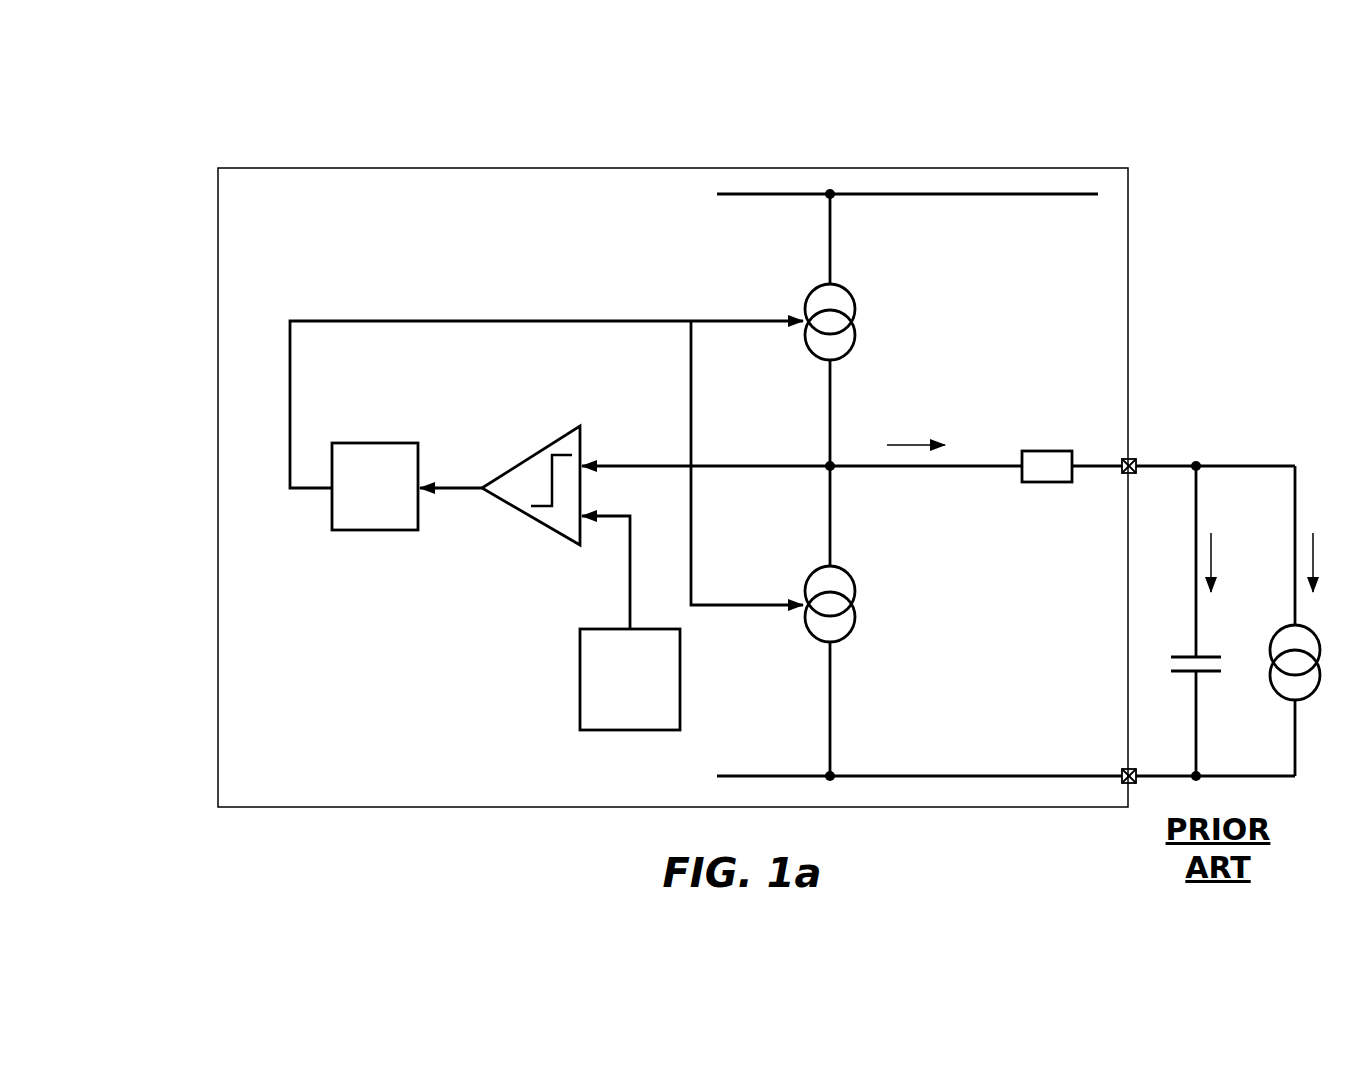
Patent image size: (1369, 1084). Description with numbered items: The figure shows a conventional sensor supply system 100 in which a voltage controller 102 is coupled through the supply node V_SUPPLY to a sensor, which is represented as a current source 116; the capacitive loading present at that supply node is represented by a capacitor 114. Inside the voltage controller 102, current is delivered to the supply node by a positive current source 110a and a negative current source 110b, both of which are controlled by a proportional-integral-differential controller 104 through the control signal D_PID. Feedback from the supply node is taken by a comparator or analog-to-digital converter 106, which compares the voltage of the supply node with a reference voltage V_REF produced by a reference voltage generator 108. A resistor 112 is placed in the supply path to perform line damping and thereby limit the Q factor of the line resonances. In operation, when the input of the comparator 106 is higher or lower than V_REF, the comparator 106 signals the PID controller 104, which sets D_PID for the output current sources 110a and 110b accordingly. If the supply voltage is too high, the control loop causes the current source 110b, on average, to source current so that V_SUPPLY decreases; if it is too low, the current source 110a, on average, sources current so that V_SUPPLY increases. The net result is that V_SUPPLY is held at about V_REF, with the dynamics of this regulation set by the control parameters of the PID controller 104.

The sensor supply system 100 is at (157, 150).
The voltage controller 102 is at (313, 168).
The proportional-integral-differential (PID) controller 104 is at (364, 443).
The comparator or analog-to-digital converter (ADC) 106 is at (542, 450).
The reference voltage generator 108 is at (598, 629).
The positive current source 110a is at (842, 291).
The negative current source 110b is at (842, 569).
The resistor 112 is at (1038, 451).
The capacitor 114 is at (1202, 657).
The current source 116 is at (1304, 640).